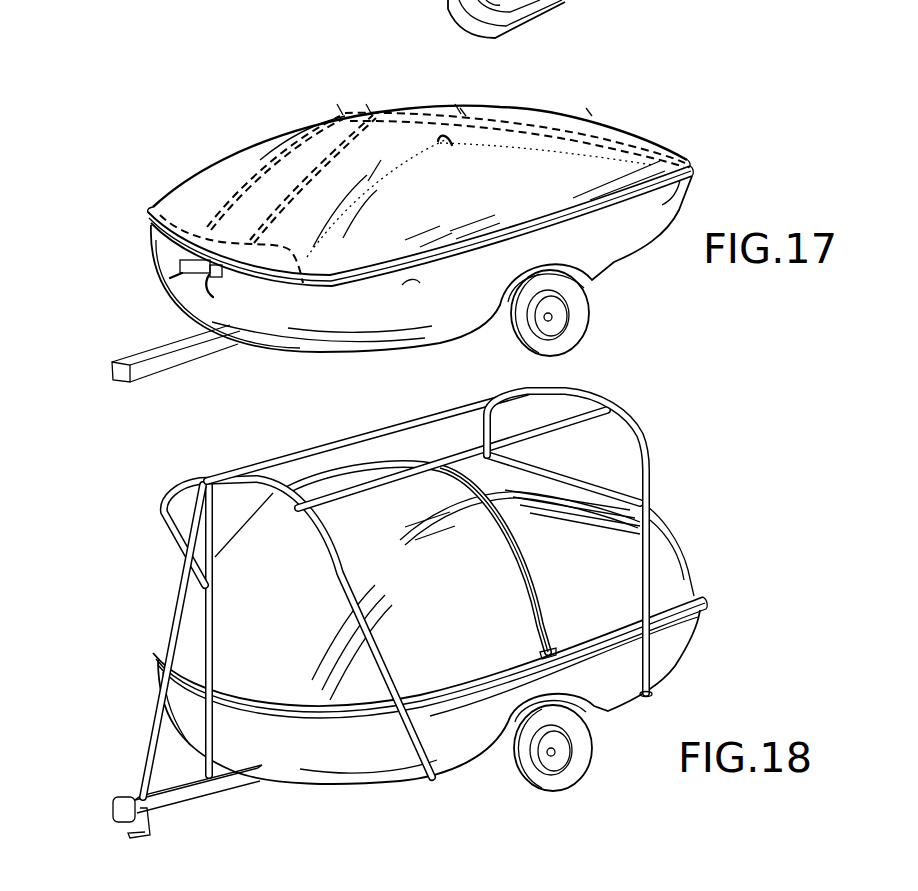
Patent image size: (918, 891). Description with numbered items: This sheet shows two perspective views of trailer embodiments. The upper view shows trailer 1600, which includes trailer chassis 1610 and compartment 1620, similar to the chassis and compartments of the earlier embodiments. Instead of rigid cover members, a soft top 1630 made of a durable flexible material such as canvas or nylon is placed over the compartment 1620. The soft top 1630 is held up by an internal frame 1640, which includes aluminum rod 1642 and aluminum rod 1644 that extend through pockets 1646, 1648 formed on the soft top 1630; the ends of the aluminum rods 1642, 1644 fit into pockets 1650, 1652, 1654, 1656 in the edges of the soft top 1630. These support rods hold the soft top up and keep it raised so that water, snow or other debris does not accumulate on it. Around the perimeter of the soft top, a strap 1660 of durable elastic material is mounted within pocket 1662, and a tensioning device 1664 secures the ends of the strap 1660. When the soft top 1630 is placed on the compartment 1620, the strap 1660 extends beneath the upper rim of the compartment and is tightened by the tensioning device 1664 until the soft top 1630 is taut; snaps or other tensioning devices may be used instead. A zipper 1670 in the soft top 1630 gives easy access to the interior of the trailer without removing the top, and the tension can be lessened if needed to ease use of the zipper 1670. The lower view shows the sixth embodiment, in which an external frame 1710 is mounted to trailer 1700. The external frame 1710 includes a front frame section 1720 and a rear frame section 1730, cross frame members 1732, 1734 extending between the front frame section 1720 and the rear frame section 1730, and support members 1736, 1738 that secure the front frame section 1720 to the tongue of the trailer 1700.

In FIG. 17, the trailer 1600 is at (180, 140).
In FIG. 17, the trailer chassis 1610 is at (220, 348).
In FIG. 17, the compartment 1620 is at (641, 233).
In FIG. 17, the soft top 1630 is at (638, 138).
In FIG. 17, the internal frame 1640 is at (270, 122).
In FIG. 17, the aluminum rod 1642 is at (458, 110).
In FIG. 17, the aluminum rod 1644 is at (462, 112).
In FIG. 17, the pocket 1646 is at (335, 108).
In FIG. 17, the pocket 1648 is at (370, 108).
In FIG. 17, the pocket 1650 is at (142, 213).
In FIG. 17, the pocket 1652 is at (300, 281).
In FIG. 17, the pocket 1654 is at (590, 110).
In FIG. 17, the pocket 1656 is at (686, 162).
In FIG. 17, the strap 1660 is at (213, 290).
In FIG. 17, the pocket 1662 is at (410, 284).
In FIG. 17, the tensioning device 1664 is at (170, 278).
In FIG. 17, the zipper 1670 is at (452, 145).
In FIG. 18, the trailer 1700 is at (716, 551).
In FIG. 18, the external frame 1710 is at (686, 468).
In FIG. 18, the front frame section 1720 is at (340, 562).
In FIG. 18, the rear frame section 1730 is at (652, 437).
In FIG. 18, the cross frame member 1732 is at (456, 412).
In FIG. 18, the cross frame member 1734 is at (575, 412).
In FIG. 18, the support member 1736 is at (152, 717).
In FIG. 18, the support member 1738 is at (215, 792).